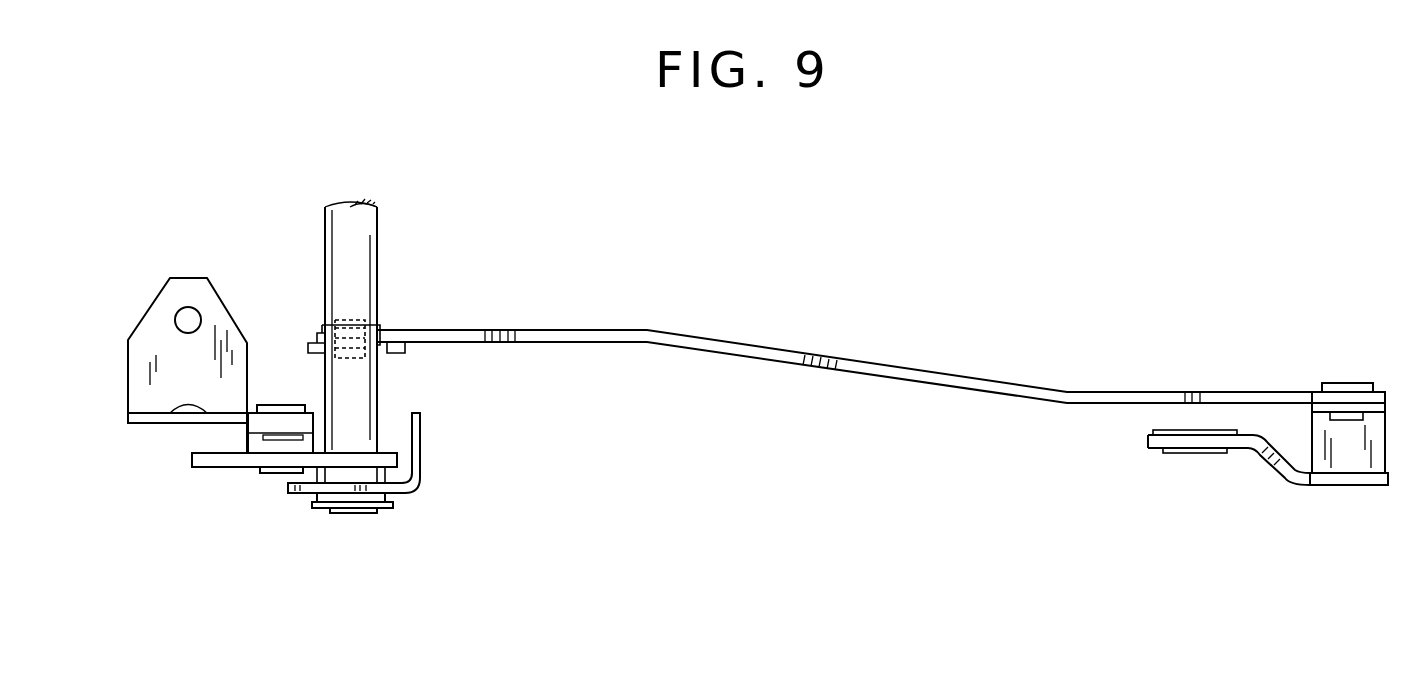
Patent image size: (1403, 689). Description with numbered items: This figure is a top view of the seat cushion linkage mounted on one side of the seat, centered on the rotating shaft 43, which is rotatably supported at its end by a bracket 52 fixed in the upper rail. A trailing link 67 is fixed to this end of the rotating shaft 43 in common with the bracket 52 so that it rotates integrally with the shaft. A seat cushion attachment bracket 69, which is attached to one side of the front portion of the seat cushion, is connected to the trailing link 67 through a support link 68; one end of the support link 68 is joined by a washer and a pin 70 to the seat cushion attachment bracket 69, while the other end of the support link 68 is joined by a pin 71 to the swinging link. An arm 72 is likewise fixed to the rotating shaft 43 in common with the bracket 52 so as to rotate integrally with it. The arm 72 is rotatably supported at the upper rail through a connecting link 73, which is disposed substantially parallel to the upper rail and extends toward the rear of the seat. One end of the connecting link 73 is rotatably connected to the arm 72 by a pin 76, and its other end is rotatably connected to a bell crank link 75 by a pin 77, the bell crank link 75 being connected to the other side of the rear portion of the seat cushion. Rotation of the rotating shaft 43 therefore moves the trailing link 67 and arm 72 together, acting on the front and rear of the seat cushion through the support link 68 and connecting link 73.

The rotating shaft 43 is at (360, 385).
The bracket 52 is at (420, 467).
The trailing link 67 is at (222, 466).
The support link 68 is at (312, 428).
The seat cushion attachment bracket 69 is at (163, 362).
The pin 70 is at (275, 404).
The pin 71 is at (276, 474).
The arm 72 is at (387, 352).
The connecting link 73 is at (760, 355).
The bell crank link 75 is at (1378, 488).
The pin 76 is at (350, 318).
The pin 77 is at (1350, 383).